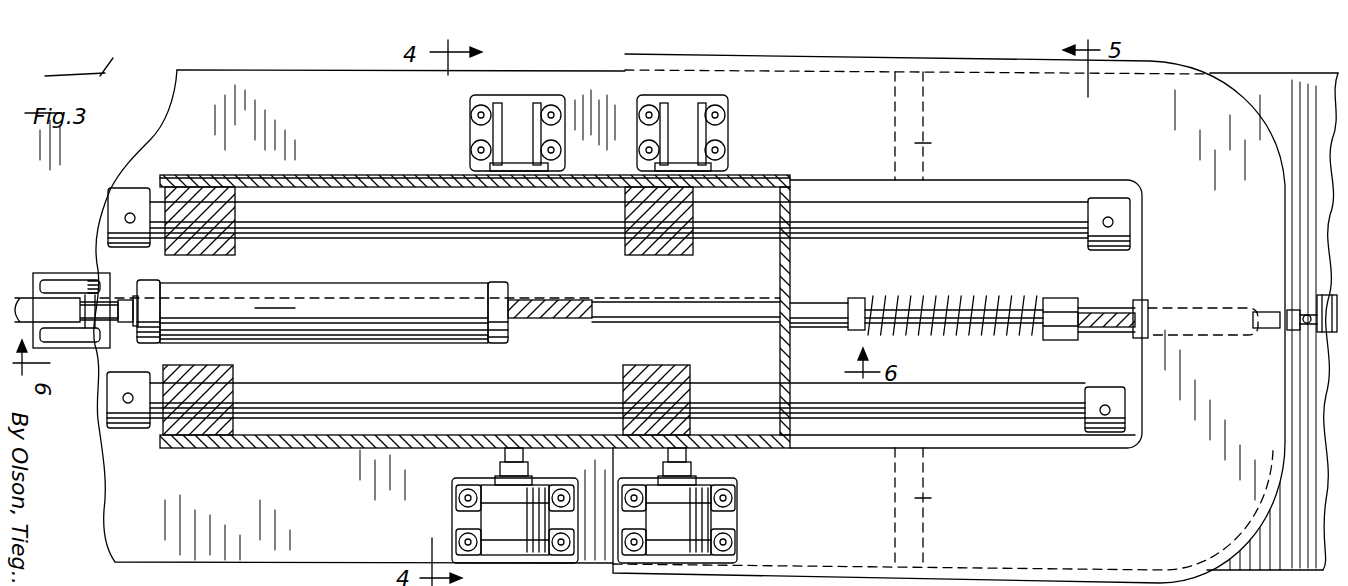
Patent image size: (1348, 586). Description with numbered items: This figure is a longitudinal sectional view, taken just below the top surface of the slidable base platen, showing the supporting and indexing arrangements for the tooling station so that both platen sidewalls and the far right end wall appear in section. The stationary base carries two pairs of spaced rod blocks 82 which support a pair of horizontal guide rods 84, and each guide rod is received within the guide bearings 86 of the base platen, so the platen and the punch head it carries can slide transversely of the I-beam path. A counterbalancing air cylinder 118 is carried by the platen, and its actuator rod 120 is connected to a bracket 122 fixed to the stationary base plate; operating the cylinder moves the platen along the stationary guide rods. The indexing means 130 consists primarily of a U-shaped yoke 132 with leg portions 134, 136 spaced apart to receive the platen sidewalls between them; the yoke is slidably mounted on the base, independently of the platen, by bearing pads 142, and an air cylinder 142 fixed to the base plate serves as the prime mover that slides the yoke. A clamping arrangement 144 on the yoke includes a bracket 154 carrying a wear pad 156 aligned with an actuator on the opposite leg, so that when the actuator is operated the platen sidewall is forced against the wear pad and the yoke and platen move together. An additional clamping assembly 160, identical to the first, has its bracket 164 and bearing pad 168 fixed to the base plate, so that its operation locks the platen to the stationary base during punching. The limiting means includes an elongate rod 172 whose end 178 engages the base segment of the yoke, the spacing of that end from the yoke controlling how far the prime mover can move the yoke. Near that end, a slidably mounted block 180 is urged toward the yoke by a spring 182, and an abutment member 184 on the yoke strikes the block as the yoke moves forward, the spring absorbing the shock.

The rod blocks 82 is at (138, 192).
The horizontal guide rods 84 is at (310, 225).
The guide bearings 86 is at (212, 210).
The counterbalancing air cylinder 118 is at (369, 291).
The actuator rod 120 is at (118, 298).
The bracket 122 is at (66, 280).
The indexing means 130 is at (1276, 134).
The yoke 132 is at (1256, 254).
The leg portion 134 is at (843, 163).
The leg portion 136 is at (850, 450).
The bearing pads / air cylinder 142 is at (931, 143).
The clamping arrangement 144 is at (745, 527).
The bracket 154 is at (678, 128).
The wear pad 156 is at (698, 152).
The clamping assembly 160 is at (442, 522).
The bracket 164 is at (478, 118).
The bearing pad 168 is at (455, 175).
The elongate rod 172 is at (808, 302).
The rod end 178 is at (1000, 298).
The slidably mounted block 180 is at (1058, 335).
The spring 182 is at (936, 297).
The abutment member 184 is at (1082, 340).